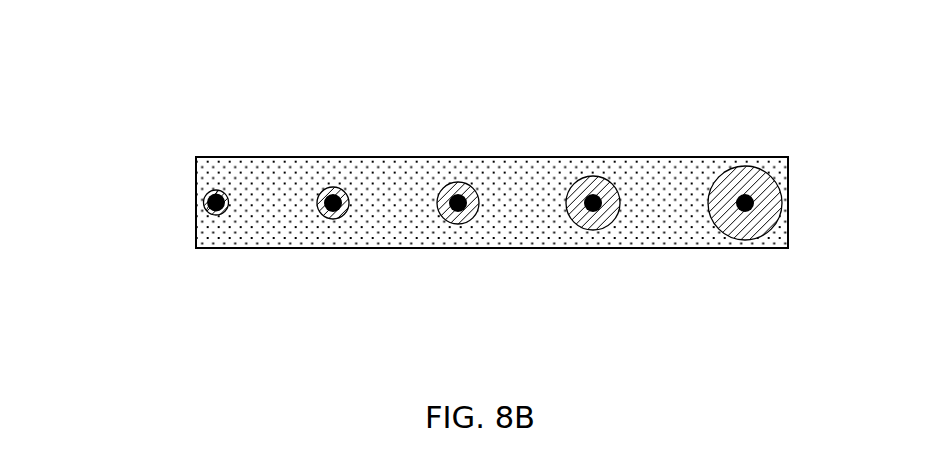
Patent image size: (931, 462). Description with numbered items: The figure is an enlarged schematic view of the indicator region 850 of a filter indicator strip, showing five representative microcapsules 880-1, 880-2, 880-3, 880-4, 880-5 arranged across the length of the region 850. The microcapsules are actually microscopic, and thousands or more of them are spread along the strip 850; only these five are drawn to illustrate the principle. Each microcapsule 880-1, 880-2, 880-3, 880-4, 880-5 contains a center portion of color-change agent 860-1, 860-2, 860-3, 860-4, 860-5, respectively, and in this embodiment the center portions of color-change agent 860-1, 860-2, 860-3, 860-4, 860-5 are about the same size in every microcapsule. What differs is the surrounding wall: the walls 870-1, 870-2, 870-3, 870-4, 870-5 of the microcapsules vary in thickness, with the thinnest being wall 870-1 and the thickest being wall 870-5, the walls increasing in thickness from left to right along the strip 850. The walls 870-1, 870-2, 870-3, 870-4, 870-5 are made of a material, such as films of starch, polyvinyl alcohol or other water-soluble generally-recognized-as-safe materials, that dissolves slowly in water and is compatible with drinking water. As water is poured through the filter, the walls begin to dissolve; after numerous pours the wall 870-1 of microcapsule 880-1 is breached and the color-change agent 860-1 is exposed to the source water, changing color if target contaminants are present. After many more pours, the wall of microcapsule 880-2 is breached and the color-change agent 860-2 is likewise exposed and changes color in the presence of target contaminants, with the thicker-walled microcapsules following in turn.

The indicator region 850 is at (180, 170).
The center portion of color-change agent 860-1 is at (205, 215).
The center portion of color-change agent 860-2 is at (321, 216).
The center portion of color-change agent 860-3 is at (450, 215).
The center portion of color-change agent 860-4 is at (580, 213).
The center portion of color-change agent 860-5 is at (730, 220).
The wall 870-1 is at (220, 213).
The wall 870-2 is at (337, 213).
The wall 870-3 is at (470, 213).
The wall 870-4 is at (600, 213).
The wall 870-5 is at (763, 213).
The microcapsule 880-1 is at (218, 170).
The microcapsule 880-2 is at (345, 172).
The microcapsule 880-3 is at (477, 172).
The microcapsule 880-4 is at (613, 172).
The microcapsule 880-5 is at (755, 166).